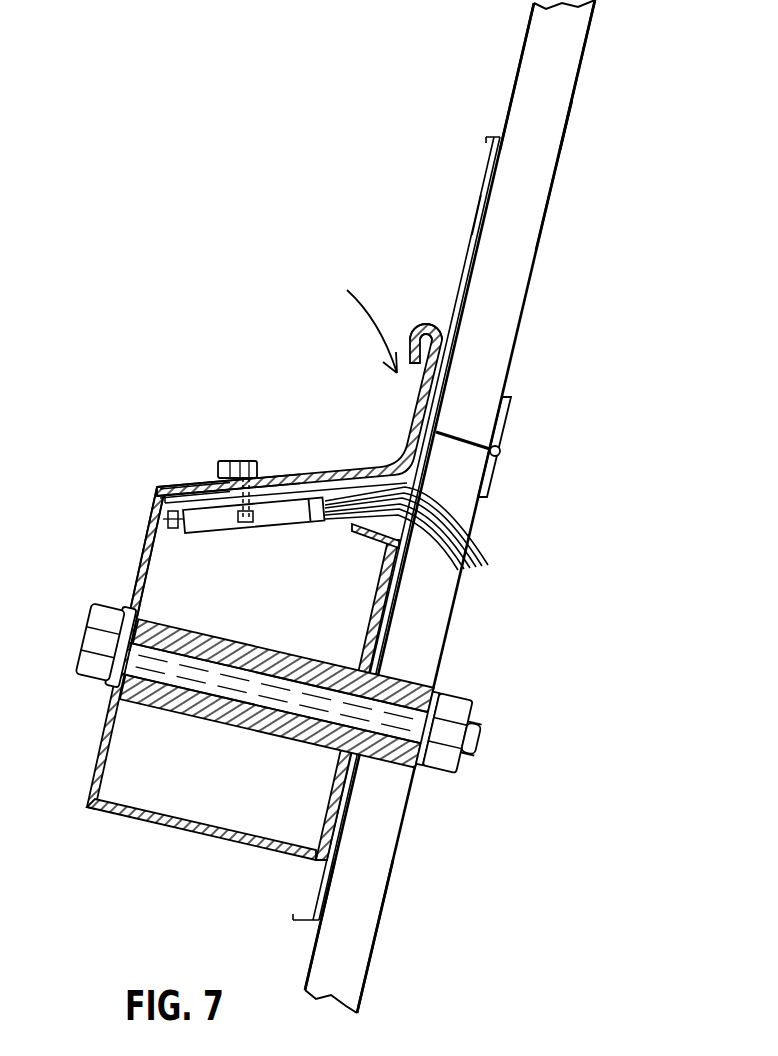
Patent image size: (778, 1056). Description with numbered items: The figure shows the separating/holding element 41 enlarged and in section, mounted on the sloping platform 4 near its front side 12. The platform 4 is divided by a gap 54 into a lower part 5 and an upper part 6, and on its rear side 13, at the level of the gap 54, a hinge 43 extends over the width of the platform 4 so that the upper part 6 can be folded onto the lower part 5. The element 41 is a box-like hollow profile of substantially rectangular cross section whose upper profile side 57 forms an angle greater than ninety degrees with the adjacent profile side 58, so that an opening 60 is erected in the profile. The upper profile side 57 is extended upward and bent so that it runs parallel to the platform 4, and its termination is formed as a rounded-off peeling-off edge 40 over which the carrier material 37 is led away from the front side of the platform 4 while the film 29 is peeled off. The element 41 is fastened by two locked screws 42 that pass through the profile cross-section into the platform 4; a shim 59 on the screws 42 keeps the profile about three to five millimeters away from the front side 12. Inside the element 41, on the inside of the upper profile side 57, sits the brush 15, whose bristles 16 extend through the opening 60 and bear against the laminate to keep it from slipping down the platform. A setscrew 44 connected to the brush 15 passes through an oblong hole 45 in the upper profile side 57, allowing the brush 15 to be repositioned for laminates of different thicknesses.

The platform 4 is at (505, 260).
The lower part of the platform 5 is at (383, 893).
The upper part of the platform 6 is at (578, 50).
The front side of the platform 12 is at (508, 100).
The rear side of the platform 13 is at (565, 128).
The film 29 is at (483, 200).
The carrier material 37 is at (359, 314).
The peeling-off edge 40 is at (424, 316).
The separating/holding element 41 is at (100, 742).
The locked screw 42 is at (95, 653).
The hinge 43 is at (492, 485).
The setscrew 44 is at (227, 460).
The oblong hole 45 is at (218, 483).
The gap 54 is at (464, 436).
The upper profile side 57 is at (303, 475).
The adjacent profile side 58 is at (148, 562).
The shim 59 is at (400, 763).
The opening 60 is at (370, 480).
The brush 15 is at (285, 517).
The bristles 16 is at (460, 548).